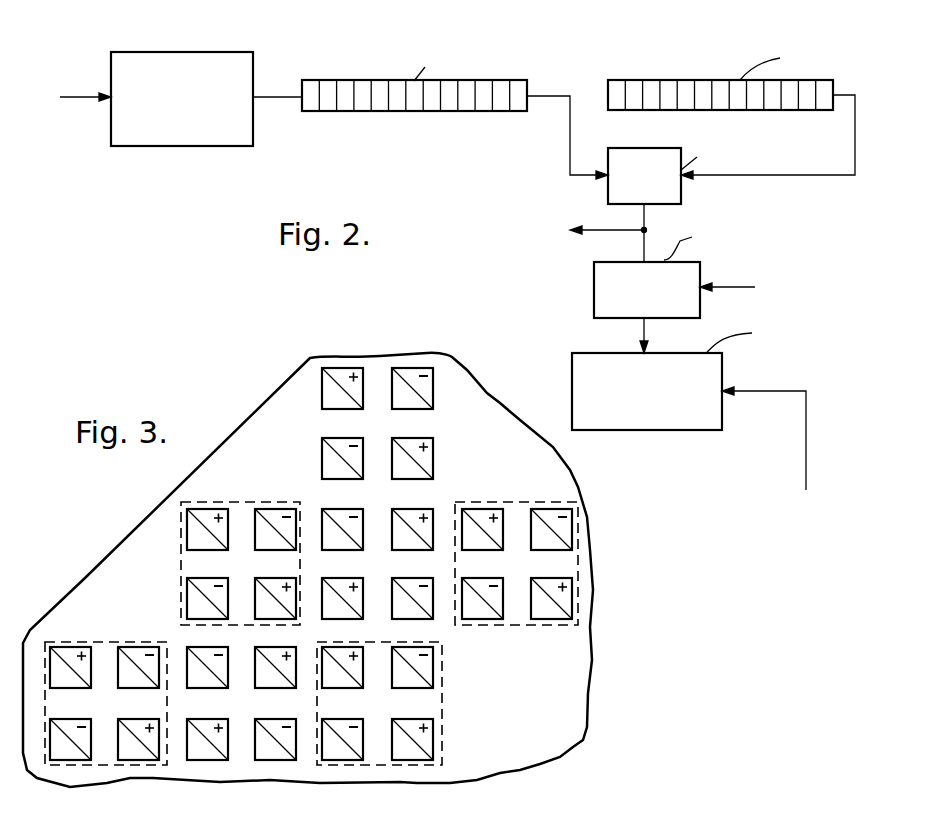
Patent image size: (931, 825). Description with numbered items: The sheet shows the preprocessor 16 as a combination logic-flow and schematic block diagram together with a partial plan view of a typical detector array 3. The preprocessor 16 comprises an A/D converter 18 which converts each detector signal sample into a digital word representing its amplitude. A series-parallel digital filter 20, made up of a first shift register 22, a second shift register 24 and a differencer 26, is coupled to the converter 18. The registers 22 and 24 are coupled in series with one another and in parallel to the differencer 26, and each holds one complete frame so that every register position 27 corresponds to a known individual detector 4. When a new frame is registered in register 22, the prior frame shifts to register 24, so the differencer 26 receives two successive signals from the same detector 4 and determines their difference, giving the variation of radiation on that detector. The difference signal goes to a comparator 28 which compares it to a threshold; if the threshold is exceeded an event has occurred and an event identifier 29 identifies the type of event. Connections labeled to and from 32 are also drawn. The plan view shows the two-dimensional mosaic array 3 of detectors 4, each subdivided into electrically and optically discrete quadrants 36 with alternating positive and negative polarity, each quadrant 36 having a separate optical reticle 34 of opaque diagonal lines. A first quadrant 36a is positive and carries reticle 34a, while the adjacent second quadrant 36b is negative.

In FIG. 2, the preprocessor 16 is at (460, 225).
In FIG. 2, the A/D converter 18 is at (171, 106).
In FIG. 2, the series-parallel digital filter 20 is at (540, 21).
In FIG. 2, the first shift register 22 is at (368, 80).
In FIG. 2, the second shift register 24 is at (720, 80).
In FIG. 2, the differencer 26 is at (633, 185).
In FIG. 2, the register position 27 is at (360, 102).
In FIG. 2, the comparator 28 is at (633, 299).
In FIG. 2, the event identifier 29 is at (640, 409).
In FIG. 2, the control unit 32 is at (682, 371).
In FIG. 3, the two-dimensional mosaic array 3 is at (308, 570).
In FIG. 3, the detector 4 is at (580, 563).
In FIG. 3, the optical reticle 34 is at (273, 517).
In FIG. 3, the detector quadrant 36 is at (420, 457).
In FIG. 3, the reticle of first quadrant 34a is at (487, 527).
In FIG. 3, the first quadrant 36a is at (500, 525).
In FIG. 3, the second quadrant 36b is at (568, 500).